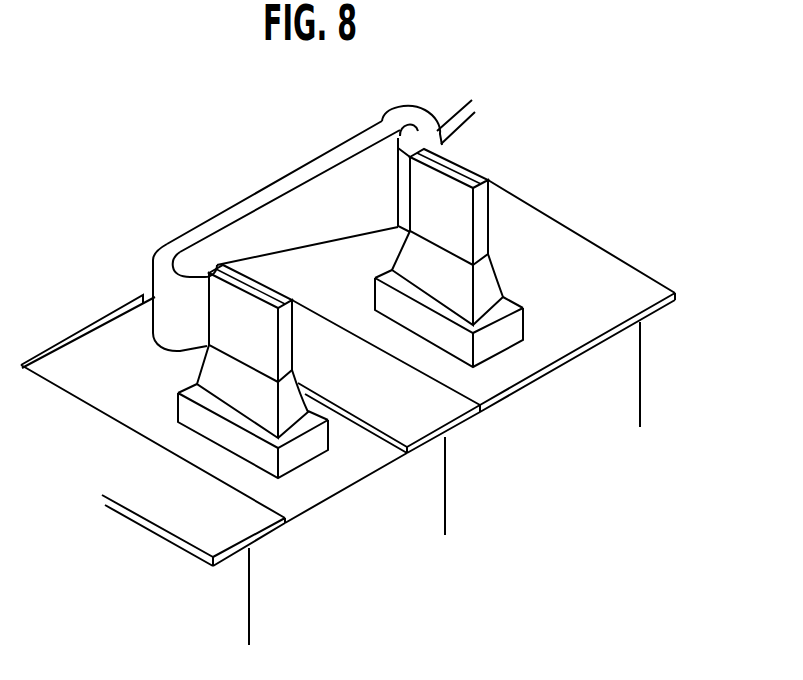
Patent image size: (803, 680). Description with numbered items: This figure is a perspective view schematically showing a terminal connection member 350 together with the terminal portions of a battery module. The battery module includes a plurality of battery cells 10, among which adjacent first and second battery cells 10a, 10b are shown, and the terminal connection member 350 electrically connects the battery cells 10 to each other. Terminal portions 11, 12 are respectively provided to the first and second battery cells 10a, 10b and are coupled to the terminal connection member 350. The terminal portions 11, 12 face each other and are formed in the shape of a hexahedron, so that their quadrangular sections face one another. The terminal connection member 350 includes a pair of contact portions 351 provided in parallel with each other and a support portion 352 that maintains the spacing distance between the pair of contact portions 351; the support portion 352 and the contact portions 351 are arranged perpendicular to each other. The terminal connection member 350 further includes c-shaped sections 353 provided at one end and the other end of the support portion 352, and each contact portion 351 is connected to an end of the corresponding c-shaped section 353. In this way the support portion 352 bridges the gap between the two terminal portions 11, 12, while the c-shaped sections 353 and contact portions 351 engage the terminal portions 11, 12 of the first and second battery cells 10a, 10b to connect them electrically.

The battery cells 10 is at (662, 515).
The first battery cell 10a is at (392, 585).
The second battery cell 10b is at (586, 472).
The terminal portion 11 is at (251, 284).
The terminal portion 12 is at (382, 126).
The terminal connection member 350 is at (216, 190).
The contact portion 351 is at (250, 347).
The support portion 352 is at (312, 168).
The c-shaped section 353 is at (173, 297).